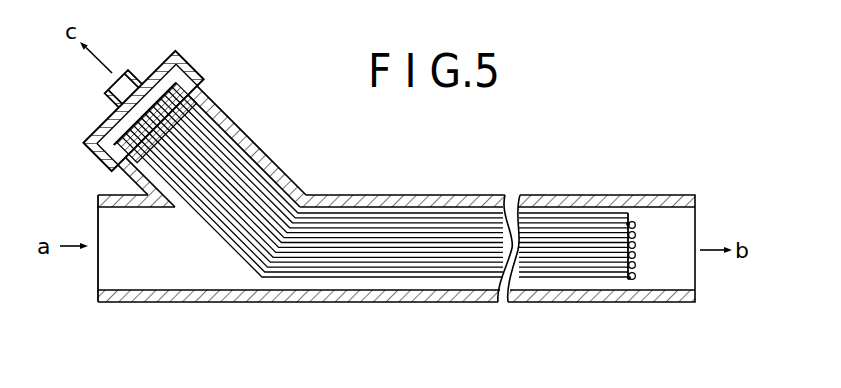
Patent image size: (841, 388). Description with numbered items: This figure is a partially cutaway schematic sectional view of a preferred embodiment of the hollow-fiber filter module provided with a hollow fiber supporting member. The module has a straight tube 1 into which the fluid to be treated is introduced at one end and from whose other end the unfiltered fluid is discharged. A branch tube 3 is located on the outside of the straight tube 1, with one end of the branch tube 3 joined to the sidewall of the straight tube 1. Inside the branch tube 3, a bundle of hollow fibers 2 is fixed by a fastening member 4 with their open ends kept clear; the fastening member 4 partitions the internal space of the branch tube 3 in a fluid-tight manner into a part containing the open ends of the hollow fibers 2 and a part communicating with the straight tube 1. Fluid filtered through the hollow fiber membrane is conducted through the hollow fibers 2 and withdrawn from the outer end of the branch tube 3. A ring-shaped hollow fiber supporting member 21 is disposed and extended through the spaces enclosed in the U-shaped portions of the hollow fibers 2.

The straight tube 1 is at (355, 195).
The hollow fibers 2 is at (261, 157).
The branch tube 3 is at (238, 136).
The fastening member 4 is at (200, 91).
The hollow fiber supporting member 21 is at (636, 230).